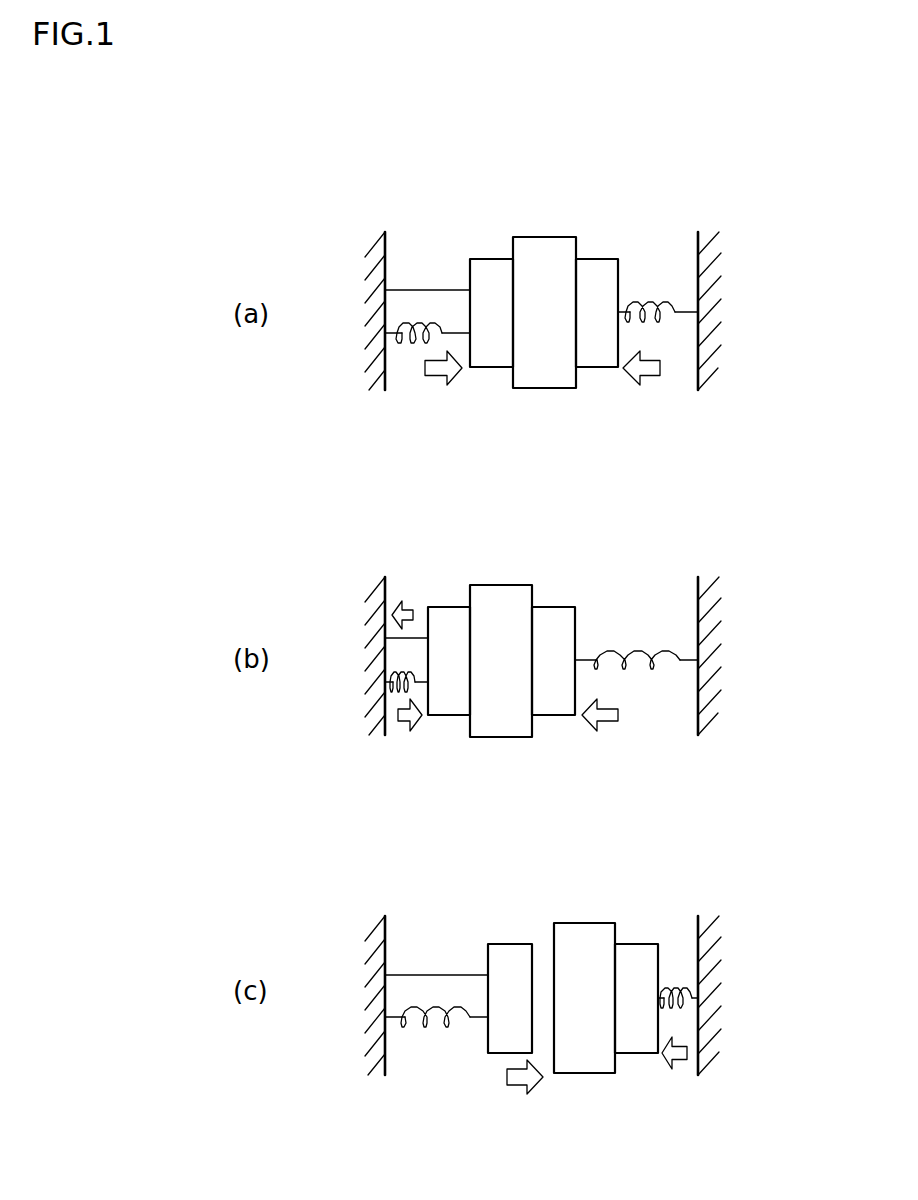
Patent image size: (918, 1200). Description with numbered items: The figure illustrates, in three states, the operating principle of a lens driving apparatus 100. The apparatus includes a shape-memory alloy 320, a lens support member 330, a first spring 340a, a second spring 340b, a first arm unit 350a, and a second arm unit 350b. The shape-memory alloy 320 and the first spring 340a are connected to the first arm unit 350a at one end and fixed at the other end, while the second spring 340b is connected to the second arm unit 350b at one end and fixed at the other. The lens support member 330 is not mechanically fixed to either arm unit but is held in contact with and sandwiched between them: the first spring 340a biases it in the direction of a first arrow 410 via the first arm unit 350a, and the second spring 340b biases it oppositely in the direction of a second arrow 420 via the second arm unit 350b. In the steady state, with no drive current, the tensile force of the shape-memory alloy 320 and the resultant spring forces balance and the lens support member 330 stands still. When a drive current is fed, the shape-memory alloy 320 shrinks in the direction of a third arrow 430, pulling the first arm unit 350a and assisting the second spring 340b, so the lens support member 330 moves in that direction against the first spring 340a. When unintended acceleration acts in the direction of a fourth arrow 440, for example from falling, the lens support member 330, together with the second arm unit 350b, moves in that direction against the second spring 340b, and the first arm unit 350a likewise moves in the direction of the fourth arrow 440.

The lens driving apparatus 100 is at (827, 311).
The shape-memory alloy 320 is at (438, 290).
The lens support member 330 is at (550, 237).
The first spring 340a is at (405, 343).
The second spring 340b is at (660, 300).
The first arm unit 350a is at (495, 259).
The second arm unit 350b is at (593, 259).
The first arrow 410 is at (450, 377).
The second arrow 420 is at (648, 377).
The third arrow 430 is at (403, 630).
The fourth arrow 440 is at (532, 1088).